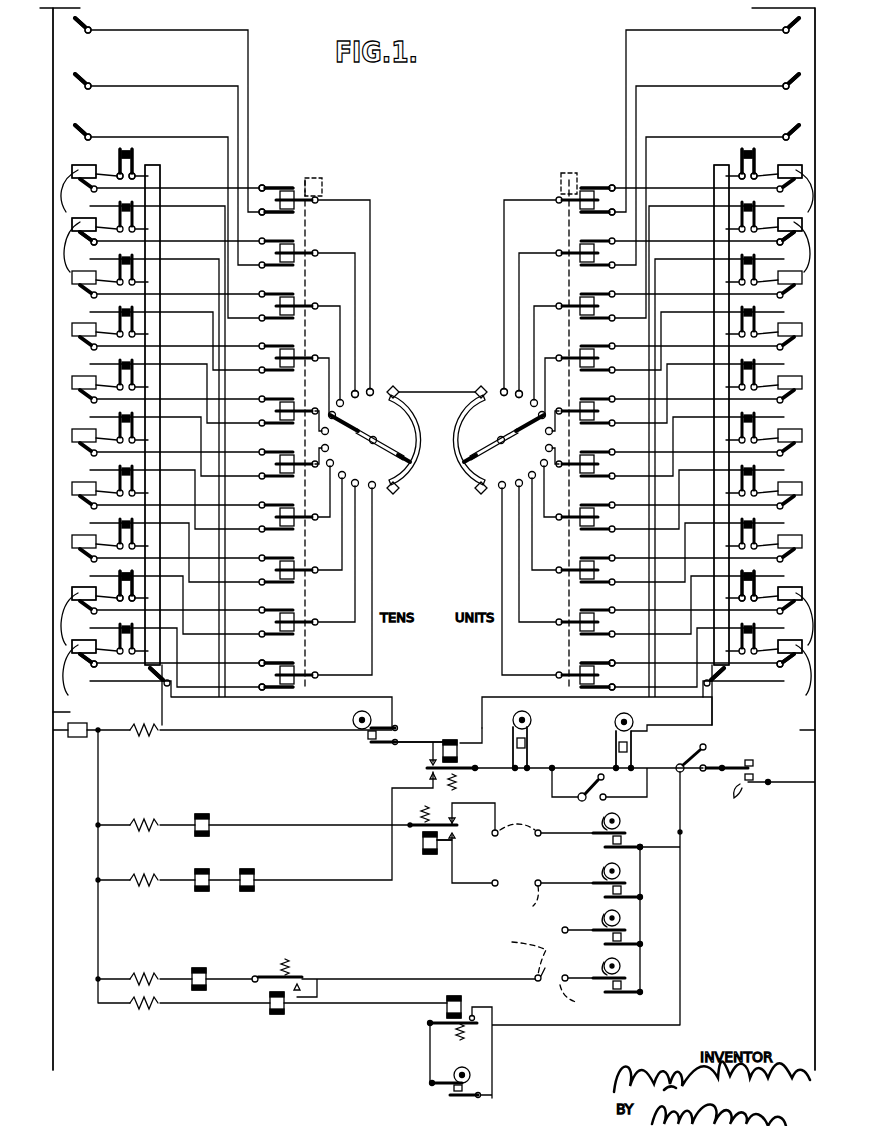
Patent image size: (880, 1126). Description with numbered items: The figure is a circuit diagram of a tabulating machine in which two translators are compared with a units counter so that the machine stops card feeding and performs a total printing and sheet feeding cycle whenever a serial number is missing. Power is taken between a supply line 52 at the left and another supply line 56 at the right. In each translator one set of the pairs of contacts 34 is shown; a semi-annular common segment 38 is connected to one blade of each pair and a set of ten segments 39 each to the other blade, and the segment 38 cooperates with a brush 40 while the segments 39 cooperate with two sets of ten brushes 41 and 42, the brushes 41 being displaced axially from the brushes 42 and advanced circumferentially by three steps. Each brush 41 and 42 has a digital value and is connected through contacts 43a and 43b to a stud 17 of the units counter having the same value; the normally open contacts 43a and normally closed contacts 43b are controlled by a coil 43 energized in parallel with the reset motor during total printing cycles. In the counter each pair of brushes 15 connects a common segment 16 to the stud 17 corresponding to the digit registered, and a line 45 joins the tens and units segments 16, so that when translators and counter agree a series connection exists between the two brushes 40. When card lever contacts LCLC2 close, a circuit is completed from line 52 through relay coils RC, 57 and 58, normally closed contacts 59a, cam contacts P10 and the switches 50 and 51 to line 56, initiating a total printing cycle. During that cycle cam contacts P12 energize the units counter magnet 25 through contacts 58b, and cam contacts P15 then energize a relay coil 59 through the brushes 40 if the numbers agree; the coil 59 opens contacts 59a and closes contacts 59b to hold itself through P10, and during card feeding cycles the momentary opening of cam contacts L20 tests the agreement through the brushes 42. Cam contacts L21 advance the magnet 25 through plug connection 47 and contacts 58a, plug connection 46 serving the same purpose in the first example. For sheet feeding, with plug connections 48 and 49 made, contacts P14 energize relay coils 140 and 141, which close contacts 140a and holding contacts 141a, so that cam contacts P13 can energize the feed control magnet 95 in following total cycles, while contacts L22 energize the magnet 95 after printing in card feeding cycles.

The supply line 52 is at (80, 8).
The supply line 56 is at (784, 535).
The brushes 42 is at (80, 90).
The segments 39 is at (436, 409).
The pair of contacts 34 is at (682, 600).
The brushes 41 is at (104, 673).
The semi-annular common segment 38 is at (160, 318).
The coil 43 is at (322, 187).
The contacts 43a is at (594, 671).
The contacts 43b is at (592, 701).
The studs 17 is at (490, 379).
The line 45 is at (437, 391).
The brushes 15 is at (380, 445).
The common segment 16 is at (458, 466).
The brush 40 is at (148, 670).
The cam contacts P15 is at (370, 736).
The relay coil 59 is at (457, 752).
The contacts 59a is at (426, 776).
The contacts 59b is at (430, 757).
The cam contacts P10 is at (531, 735).
The cam contacts L20 is at (633, 725).
The switch 51 is at (697, 758).
The contacts LCLC2 is at (752, 764).
The switch 50 is at (594, 798).
The plug connection 47 is at (528, 812).
The contacts 58a is at (455, 822).
The relay coil 58 is at (423, 844).
The contacts 58b is at (455, 846).
The units counter magnet 25 is at (205, 820).
The relay coil RC is at (205, 876).
The relay coil 57 is at (252, 876).
The plug connection 46 is at (516, 898).
The cam contacts L21 is at (627, 826).
The cam contacts P12 is at (627, 886).
The plug connection 48 is at (525, 951).
The cam contacts P13 is at (627, 934).
The plug connection 49 is at (564, 991).
The contacts L22 is at (627, 982).
The feed control magnet 95 is at (204, 974).
The contacts 140a is at (300, 980).
The relay coil 140 is at (270, 1008).
The relay coil 141 is at (456, 1005).
The contacts 141a is at (478, 1018).
The contacts P14 is at (470, 1089).